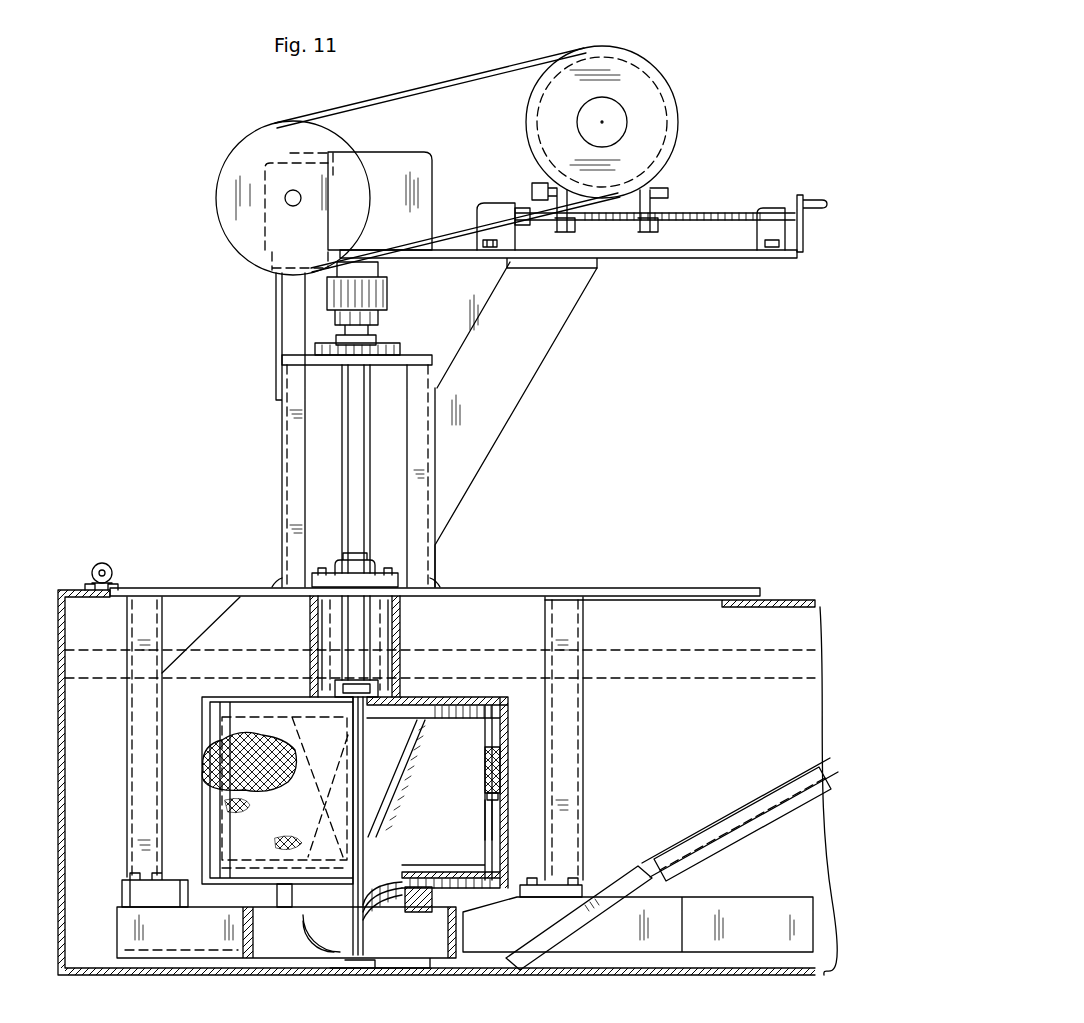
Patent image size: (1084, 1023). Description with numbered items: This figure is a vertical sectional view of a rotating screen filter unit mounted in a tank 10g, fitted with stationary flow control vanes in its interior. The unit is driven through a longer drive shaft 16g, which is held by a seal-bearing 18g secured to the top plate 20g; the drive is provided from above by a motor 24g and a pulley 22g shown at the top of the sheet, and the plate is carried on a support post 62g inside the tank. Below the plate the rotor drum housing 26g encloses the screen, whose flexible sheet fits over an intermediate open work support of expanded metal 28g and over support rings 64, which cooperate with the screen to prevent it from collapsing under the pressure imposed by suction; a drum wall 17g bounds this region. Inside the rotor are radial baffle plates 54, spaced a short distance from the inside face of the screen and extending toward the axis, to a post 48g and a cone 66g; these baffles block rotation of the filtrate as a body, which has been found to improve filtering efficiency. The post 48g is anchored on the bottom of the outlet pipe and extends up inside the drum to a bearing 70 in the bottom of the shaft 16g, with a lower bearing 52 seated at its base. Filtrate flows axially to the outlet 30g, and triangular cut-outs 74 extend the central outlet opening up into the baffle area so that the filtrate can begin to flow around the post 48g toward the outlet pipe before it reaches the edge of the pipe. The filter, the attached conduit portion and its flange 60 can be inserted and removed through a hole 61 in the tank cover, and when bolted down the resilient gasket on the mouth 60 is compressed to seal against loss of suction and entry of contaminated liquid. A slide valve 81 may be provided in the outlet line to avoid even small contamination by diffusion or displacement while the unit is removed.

The tank 10g is at (75, 978).
The drive shaft 16g is at (366, 428).
The drum wall 17g is at (502, 842).
The seal-bearing 18g is at (340, 572).
The top plate 20g is at (505, 590).
The driven pulley 22g is at (658, 134).
The motor 24g is at (418, 190).
The drum housing 26g is at (460, 700).
The open work support 28g is at (265, 785).
The outlet 30g is at (388, 862).
The post 48g is at (362, 926).
The lower bearing 52 is at (440, 901).
The baffle plates 54 is at (450, 782).
The flange 60 is at (530, 975).
The hole 61 is at (634, 600).
The support post 62g is at (578, 748).
The support rings 64 is at (502, 797).
The cone 66g is at (362, 742).
The bearing 70 is at (392, 348).
The triangular cut-outs 74 is at (386, 838).
The slide valve 81 is at (782, 806).